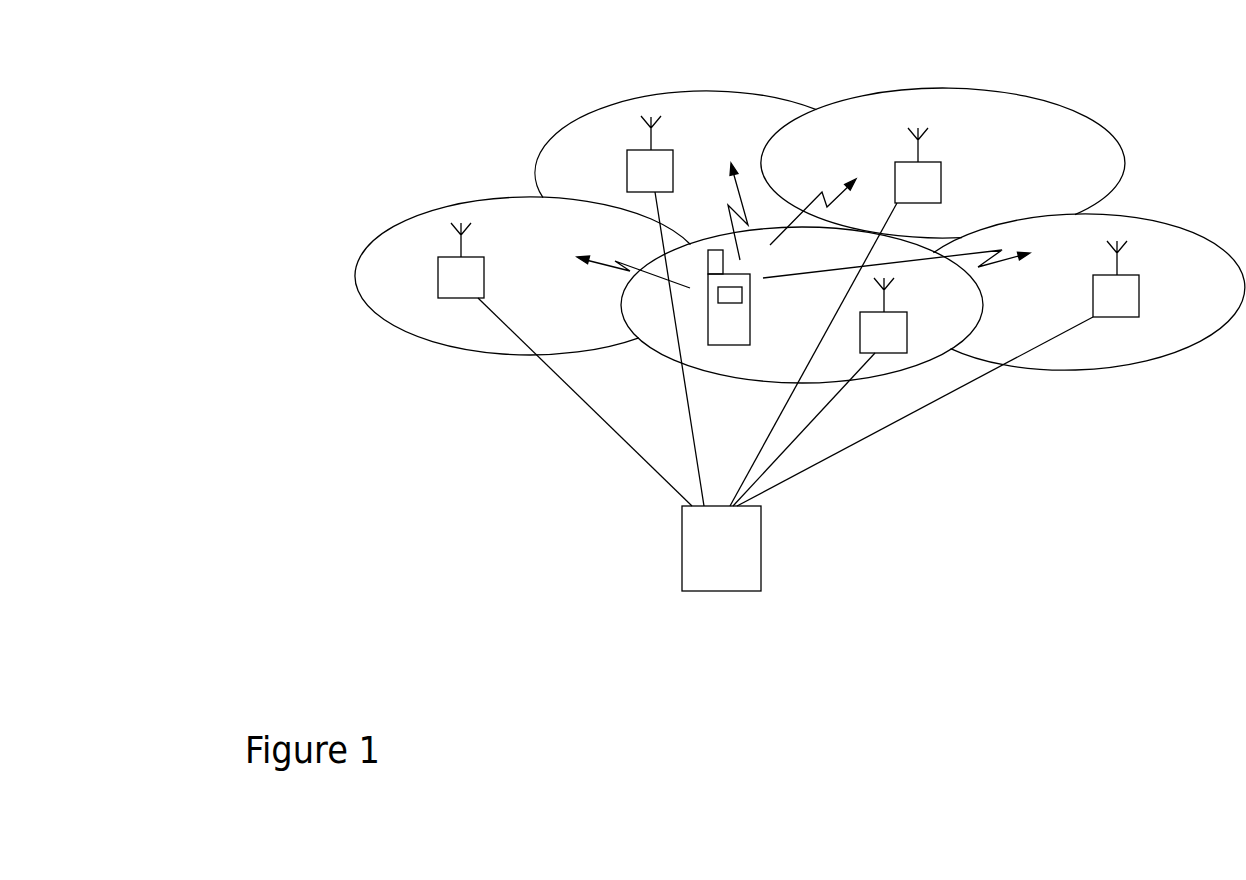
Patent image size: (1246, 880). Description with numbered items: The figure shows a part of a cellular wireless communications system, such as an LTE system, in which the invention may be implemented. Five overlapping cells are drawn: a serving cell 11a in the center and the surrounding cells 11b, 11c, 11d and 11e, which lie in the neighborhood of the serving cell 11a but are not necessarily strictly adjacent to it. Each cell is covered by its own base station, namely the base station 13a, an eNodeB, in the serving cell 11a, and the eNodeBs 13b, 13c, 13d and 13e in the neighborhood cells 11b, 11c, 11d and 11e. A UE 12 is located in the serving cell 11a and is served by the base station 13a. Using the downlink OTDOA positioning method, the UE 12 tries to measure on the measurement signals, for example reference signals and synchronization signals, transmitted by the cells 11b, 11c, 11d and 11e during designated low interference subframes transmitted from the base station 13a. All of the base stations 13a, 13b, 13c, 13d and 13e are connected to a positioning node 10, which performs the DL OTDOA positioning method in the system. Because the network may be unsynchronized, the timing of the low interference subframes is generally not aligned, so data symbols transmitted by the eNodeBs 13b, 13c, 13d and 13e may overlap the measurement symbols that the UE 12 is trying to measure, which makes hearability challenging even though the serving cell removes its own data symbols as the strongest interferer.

The positioning node 10 is at (768, 580).
The serving cell 11a is at (767, 388).
The cell 11b is at (440, 353).
The cell 11c is at (1118, 383).
The cell 11d is at (950, 77).
The cell 11e is at (680, 82).
The UE 12 is at (763, 333).
The base station 13a is at (913, 333).
The eNodeB 13b is at (511, 268).
The eNodeB 13c is at (1167, 285).
The eNodeB 13d is at (962, 172).
The eNodeB 13e is at (696, 145).